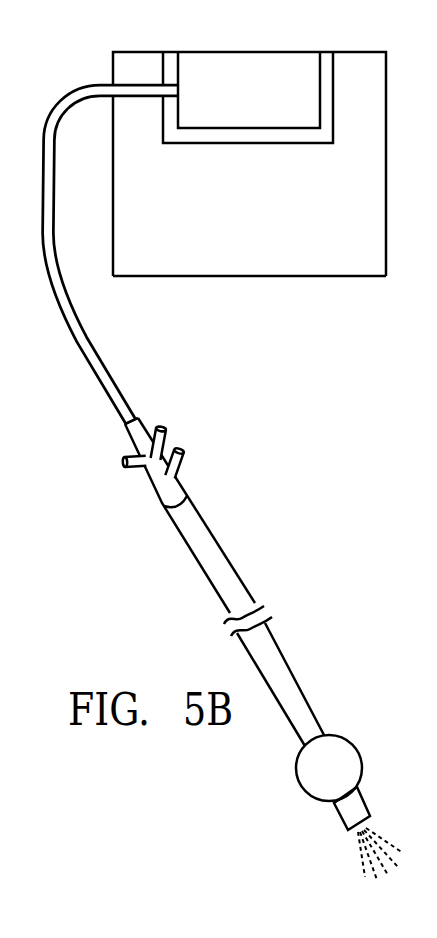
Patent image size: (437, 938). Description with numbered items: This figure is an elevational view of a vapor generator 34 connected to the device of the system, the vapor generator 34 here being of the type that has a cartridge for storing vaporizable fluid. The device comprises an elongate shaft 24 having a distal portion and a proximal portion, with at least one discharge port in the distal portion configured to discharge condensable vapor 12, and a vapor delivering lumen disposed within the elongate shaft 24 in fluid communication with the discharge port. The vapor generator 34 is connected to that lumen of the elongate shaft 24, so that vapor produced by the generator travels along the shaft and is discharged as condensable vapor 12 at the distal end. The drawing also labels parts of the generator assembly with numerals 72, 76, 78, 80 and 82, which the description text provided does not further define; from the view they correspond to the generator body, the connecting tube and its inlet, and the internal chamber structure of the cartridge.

The condensable vapor 12 is at (362, 866).
The elongate shaft 24 is at (235, 570).
The vapor generator 34 is at (387, 170).
The base 72 is at (337, 283).
The supply tube 76 is at (133, 82).
The inlet port 78 is at (163, 97).
The channel 80 is at (275, 145).
The chamber 82 is at (273, 62).